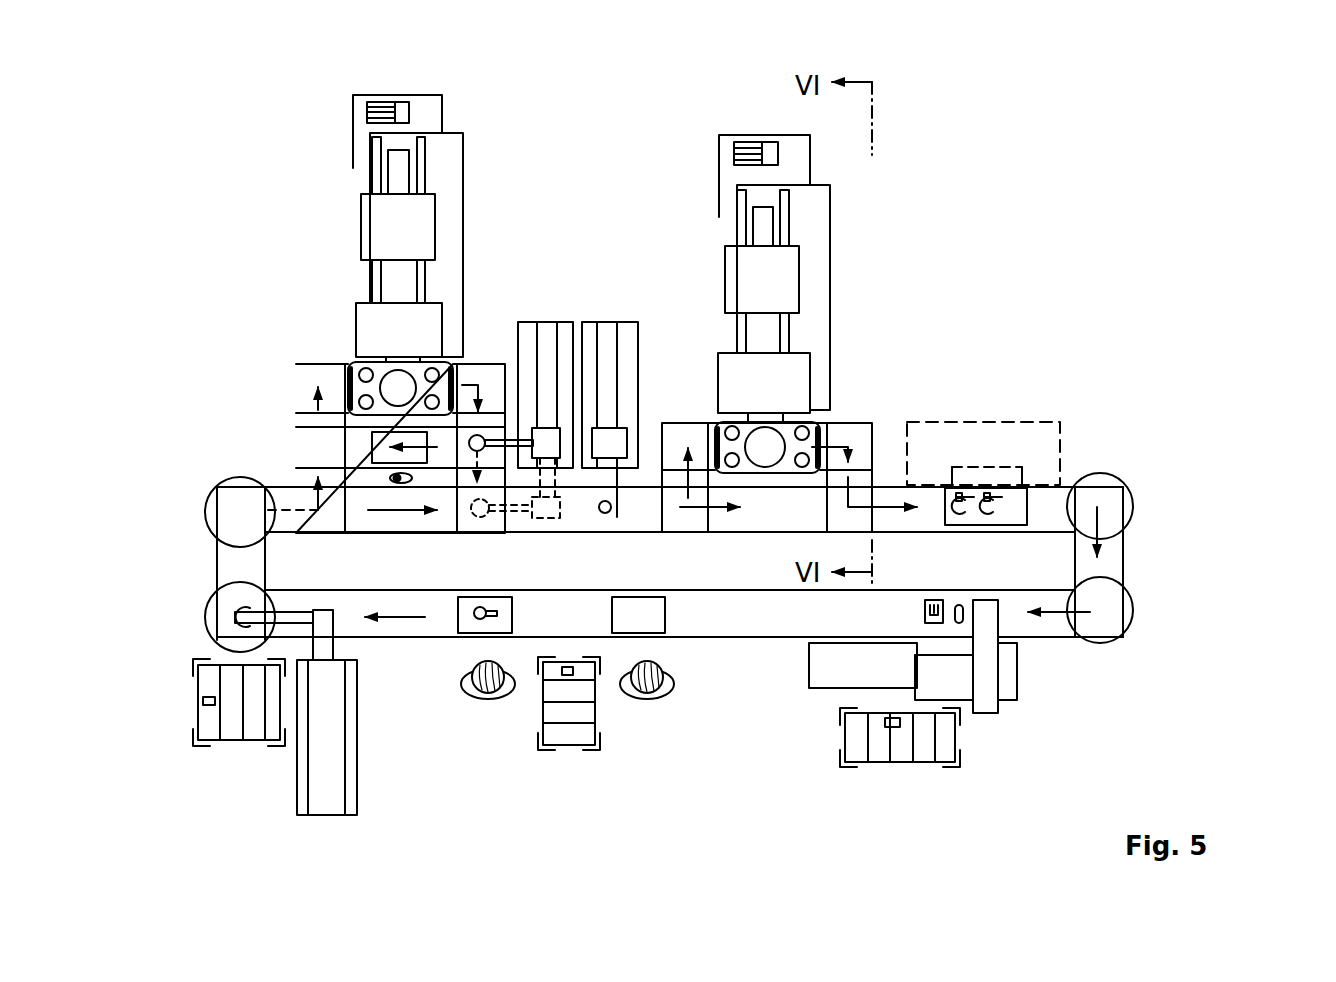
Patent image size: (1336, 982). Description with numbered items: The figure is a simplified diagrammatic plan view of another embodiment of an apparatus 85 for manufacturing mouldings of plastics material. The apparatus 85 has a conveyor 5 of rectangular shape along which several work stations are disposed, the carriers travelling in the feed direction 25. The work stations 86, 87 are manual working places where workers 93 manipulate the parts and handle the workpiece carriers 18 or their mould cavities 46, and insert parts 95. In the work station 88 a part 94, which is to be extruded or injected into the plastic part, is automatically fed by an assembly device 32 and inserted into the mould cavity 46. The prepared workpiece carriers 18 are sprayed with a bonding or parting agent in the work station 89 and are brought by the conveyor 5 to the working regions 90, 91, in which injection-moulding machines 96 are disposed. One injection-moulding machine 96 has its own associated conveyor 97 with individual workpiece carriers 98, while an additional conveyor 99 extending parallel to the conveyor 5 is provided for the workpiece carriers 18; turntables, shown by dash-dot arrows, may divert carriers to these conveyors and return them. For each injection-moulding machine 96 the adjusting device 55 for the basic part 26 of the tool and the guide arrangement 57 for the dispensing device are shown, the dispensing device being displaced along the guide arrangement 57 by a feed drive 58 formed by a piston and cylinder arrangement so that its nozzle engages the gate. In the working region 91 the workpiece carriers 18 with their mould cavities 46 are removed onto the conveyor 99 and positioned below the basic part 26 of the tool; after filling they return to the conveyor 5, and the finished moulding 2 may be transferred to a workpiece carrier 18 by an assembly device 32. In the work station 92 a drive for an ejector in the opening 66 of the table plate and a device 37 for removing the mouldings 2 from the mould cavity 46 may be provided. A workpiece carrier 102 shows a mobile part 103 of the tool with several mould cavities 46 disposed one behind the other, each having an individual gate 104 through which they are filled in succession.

The moulding 2 is at (890, 725).
The conveyor 5 is at (1133, 497).
The workpiece carrier 18 is at (467, 617).
The feed direction 25 is at (370, 512).
The basic part of the tool 26 is at (352, 362).
The assembly device 32 is at (551, 338).
The device for removing the mouldings 37 is at (987, 668).
The mould cavity 46 is at (957, 478).
The adjusting device 55 is at (420, 365).
The guide arrangement 57 is at (425, 160).
The feed drive 58 is at (765, 233).
The opening in the table plate 66 is at (940, 612).
The apparatus 85 is at (968, 140).
The work station 86 is at (708, 617).
The work station 87 is at (437, 652).
The work station 88 is at (200, 617).
The work station 89 is at (200, 503).
The working region 90 is at (478, 335).
The working region 91 is at (850, 393).
The work station 92 is at (1017, 622).
The worker 93 is at (385, 455).
The part 94 is at (213, 707).
The part 95 is at (568, 672).
The injection-moulding machine 96 is at (410, 237).
The conveyor 97 is at (307, 360).
The workpiece carrier 98 is at (395, 478).
The conveyor 99 is at (992, 420).
The workpiece carrier 102 is at (1032, 508).
The mobile part of the tool 103 is at (1015, 535).
The gate 104 is at (1068, 475).